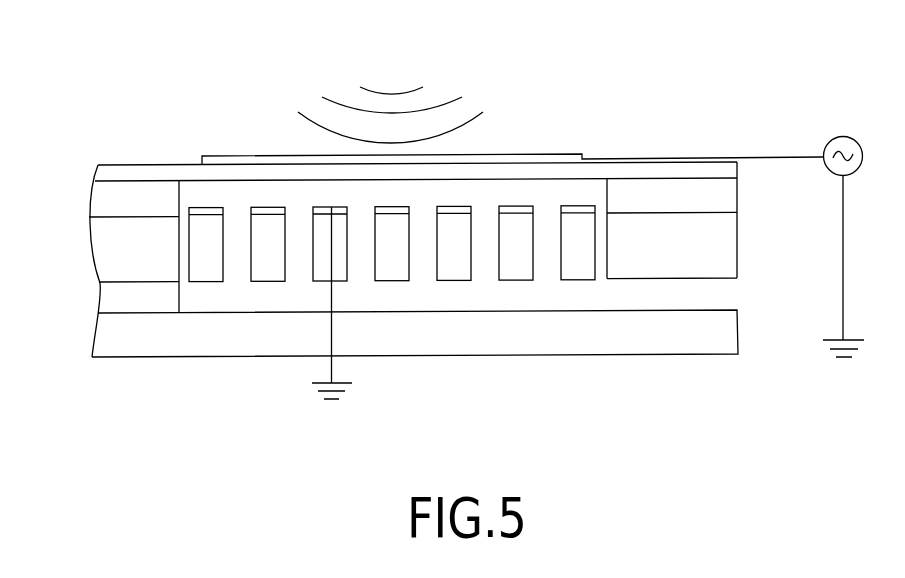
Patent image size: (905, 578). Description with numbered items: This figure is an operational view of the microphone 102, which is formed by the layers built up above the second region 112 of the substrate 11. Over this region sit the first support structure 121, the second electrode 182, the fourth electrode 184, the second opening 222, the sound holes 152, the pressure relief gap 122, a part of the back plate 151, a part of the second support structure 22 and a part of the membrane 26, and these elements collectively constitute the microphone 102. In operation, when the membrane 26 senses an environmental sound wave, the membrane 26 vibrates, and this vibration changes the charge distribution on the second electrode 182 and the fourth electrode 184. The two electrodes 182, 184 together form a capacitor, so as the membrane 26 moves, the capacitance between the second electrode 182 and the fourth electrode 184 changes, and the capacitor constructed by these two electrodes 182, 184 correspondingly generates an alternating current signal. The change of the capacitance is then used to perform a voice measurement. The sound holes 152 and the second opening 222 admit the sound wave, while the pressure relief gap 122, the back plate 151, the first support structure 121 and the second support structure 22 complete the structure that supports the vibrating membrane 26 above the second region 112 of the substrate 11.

The substrate 11 is at (673, 333).
The second region 112 is at (420, 312).
The first support structure 121 is at (122, 295).
The pressure relief gap 122 is at (700, 295).
The back plate 151 is at (115, 252).
The sound holes 152 is at (237, 228).
The second electrode 182 is at (585, 208).
The fourth electrode 184 is at (550, 158).
The second support structure 22 is at (108, 202).
The second opening 222 is at (199, 195).
The membrane 26 is at (110, 173).
The microphone 102 is at (528, 110).